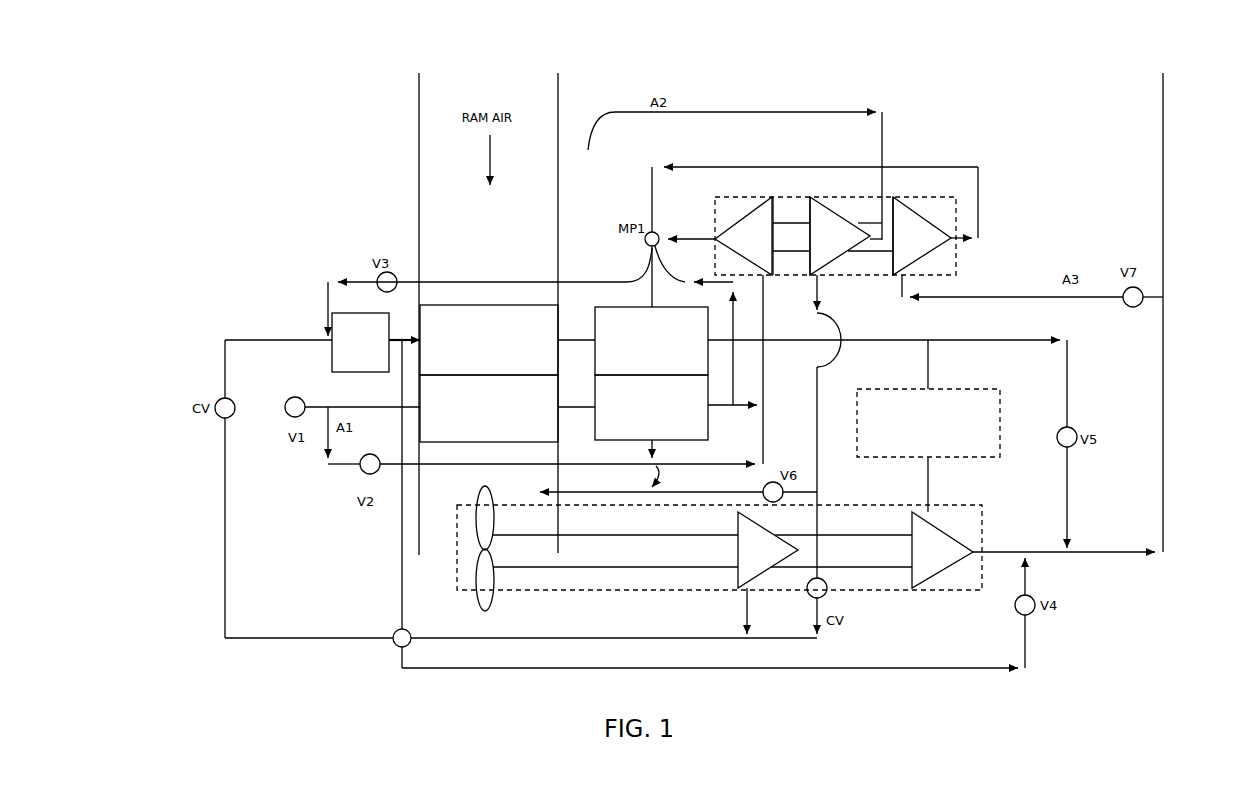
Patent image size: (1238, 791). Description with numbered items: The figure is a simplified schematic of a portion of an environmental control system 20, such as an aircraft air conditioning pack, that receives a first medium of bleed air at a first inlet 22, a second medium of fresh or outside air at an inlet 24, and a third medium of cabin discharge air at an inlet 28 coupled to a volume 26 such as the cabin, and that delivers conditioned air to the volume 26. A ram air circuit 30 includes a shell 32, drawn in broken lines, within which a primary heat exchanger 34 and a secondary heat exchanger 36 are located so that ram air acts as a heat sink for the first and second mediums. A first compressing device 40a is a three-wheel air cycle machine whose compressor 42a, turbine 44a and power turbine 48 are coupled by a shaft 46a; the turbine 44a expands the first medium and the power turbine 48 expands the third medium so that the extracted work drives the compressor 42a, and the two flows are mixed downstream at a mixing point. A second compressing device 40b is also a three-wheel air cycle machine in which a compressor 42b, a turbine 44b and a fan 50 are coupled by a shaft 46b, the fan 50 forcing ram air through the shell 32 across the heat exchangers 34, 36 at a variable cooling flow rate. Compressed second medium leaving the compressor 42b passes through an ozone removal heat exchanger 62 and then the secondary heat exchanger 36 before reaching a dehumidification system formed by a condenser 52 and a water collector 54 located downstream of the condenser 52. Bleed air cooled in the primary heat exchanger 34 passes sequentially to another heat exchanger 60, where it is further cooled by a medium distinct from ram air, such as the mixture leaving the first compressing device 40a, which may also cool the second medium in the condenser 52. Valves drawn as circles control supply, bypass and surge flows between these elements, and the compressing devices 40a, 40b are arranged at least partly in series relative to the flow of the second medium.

The environmental control system 20 is at (233, 130).
The first inlet 22 is at (287, 399).
The inlet 24 is at (730, 176).
The volume 26 is at (1223, 430).
The inlet 28 is at (1163, 292).
The ram air circuit 30 is at (402, 106).
The shell 32 is at (417, 165).
The primary heat exchanger 34 is at (480, 432).
The secondary heat exchanger 36 is at (480, 363).
The first compressing device 40a is at (948, 190).
The compressor 42a is at (835, 222).
The turbine 44a is at (727, 232).
The shaft 46a is at (787, 230).
The power turbine 48 is at (952, 240).
The second compressing device 40b is at (912, 604).
The compressor 42b is at (758, 580).
The turbine 44b is at (965, 548).
The shaft 46b is at (620, 555).
The fan 50 is at (492, 575).
The condenser 52 is at (643, 361).
The water collector 54 is at (920, 444).
The heat exchanger 60 is at (643, 431).
The ozone removal heat exchanger 62 is at (382, 369).